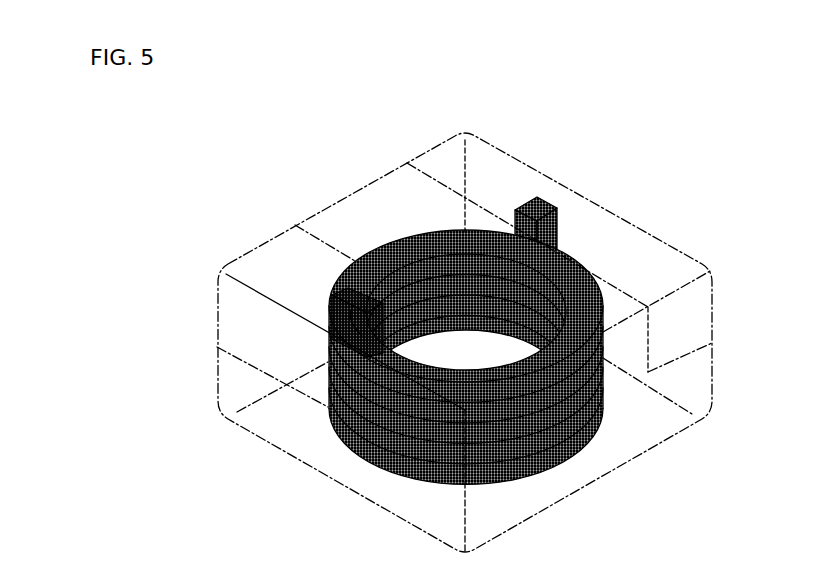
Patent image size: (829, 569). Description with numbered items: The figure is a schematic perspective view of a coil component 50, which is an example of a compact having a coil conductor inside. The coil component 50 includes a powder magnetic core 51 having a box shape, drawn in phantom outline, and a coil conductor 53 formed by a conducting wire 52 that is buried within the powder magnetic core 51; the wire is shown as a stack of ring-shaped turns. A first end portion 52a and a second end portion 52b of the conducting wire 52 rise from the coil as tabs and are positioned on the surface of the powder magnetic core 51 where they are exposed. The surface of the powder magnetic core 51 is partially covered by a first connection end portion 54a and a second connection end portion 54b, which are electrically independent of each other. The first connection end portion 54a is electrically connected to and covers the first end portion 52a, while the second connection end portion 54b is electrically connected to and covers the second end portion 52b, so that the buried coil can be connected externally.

The coil component 50 is at (313, 157).
The powder magnetic core 51 is at (622, 450).
The conducting wire 52 is at (548, 476).
The first end portion 52a is at (345, 291).
The second end portion 52b is at (537, 207).
The coil conductor 53 is at (357, 448).
The first connection end portion 54a is at (270, 253).
The second connection end portion 54b is at (447, 153).